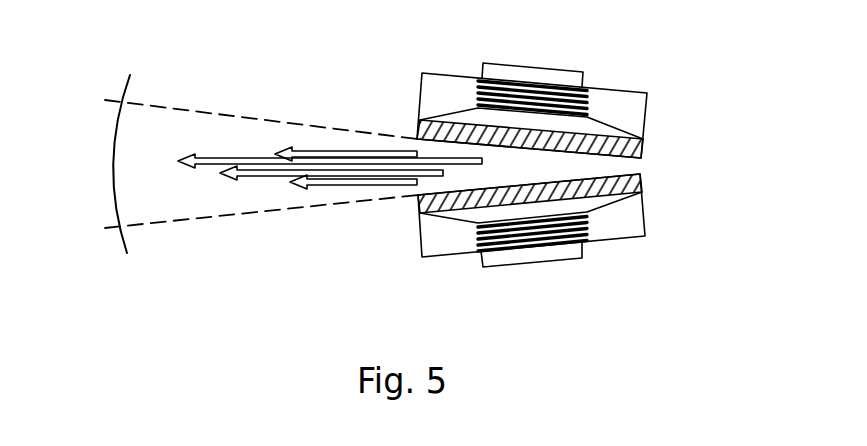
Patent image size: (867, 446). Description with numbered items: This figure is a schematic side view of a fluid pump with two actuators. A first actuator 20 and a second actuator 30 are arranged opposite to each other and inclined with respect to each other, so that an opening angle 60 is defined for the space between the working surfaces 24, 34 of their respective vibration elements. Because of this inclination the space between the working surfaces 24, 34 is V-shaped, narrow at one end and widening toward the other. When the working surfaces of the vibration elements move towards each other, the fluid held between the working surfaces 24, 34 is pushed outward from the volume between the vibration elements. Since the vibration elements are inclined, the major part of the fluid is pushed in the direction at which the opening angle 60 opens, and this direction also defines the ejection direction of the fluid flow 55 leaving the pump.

The first actuator 20 is at (566, 249).
The working surface 24 is at (538, 172).
The second actuator 30 is at (530, 99).
The working surface 34 is at (513, 152).
The fluid flow 55 is at (223, 158).
The opening angle 60 is at (114, 138).